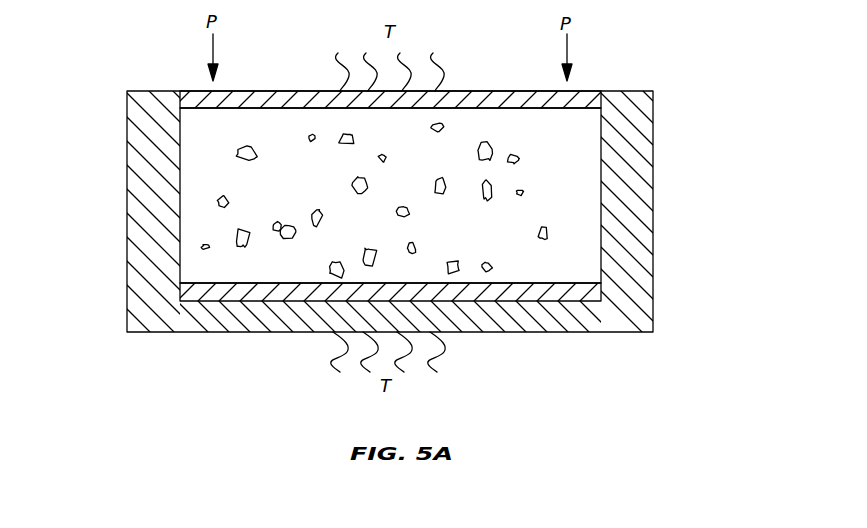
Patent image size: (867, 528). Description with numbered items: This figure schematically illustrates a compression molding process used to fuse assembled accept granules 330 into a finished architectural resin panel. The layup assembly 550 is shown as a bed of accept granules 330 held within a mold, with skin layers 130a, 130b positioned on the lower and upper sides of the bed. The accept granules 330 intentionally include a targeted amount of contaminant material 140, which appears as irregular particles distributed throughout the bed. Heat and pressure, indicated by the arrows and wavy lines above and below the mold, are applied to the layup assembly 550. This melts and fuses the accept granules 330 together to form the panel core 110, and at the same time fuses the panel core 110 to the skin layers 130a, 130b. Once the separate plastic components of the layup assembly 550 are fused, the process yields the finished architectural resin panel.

The panel core 110 is at (587, 224).
The skin layer 130a is at (183, 292).
The skin layer 130b is at (192, 93).
The contaminant material 140 is at (217, 203).
The accept granules 330 is at (578, 263).
The layup assembly 550 is at (590, 91).